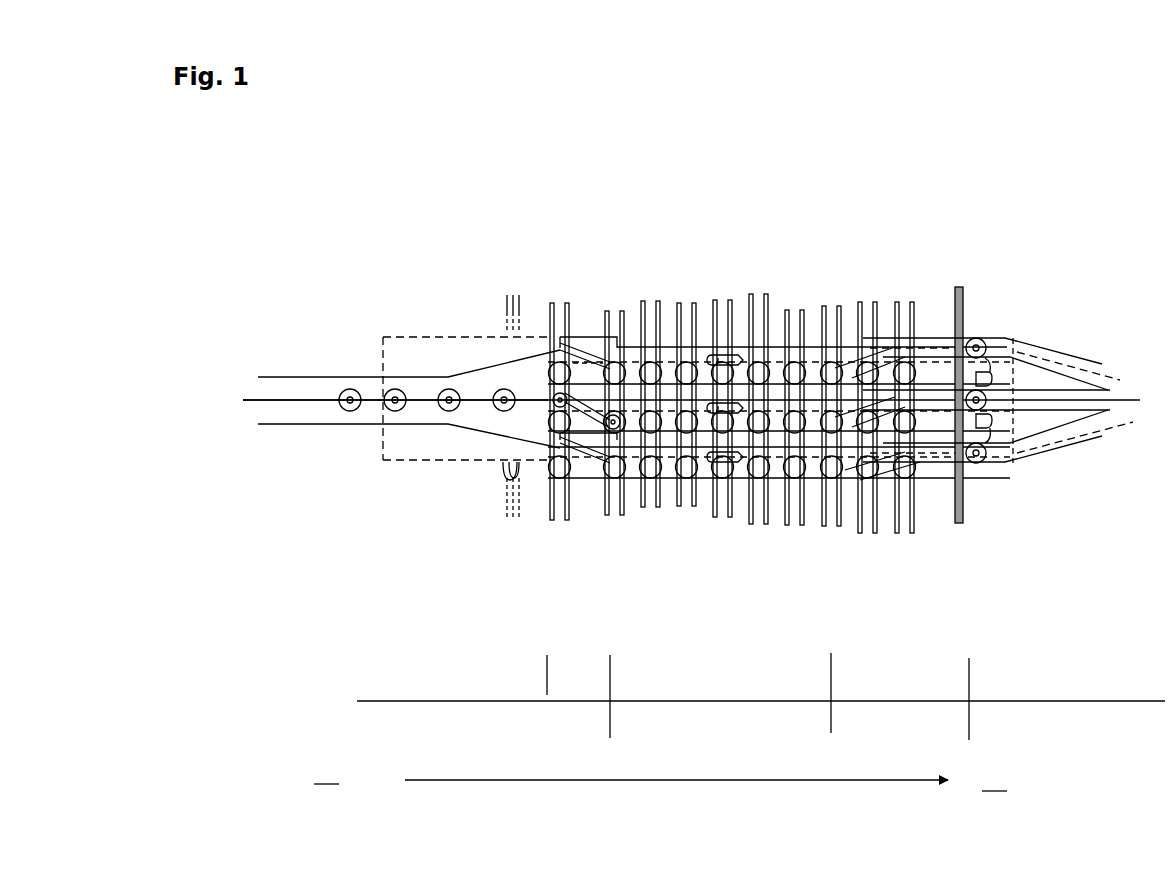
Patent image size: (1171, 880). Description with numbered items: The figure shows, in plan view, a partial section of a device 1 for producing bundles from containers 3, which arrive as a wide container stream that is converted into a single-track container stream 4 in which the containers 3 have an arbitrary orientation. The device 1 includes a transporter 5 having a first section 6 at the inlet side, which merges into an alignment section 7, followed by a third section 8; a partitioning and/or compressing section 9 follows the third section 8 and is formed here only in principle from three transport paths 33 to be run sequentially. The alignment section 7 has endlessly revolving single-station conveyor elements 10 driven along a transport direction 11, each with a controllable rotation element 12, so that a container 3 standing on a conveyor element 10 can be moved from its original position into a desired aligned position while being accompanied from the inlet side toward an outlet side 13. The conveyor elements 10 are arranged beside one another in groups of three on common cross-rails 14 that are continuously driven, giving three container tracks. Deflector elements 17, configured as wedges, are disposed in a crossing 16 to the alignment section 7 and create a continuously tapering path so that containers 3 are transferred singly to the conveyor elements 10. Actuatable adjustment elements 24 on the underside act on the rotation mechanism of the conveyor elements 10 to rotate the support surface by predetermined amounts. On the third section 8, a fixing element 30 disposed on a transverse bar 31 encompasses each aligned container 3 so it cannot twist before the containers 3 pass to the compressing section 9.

The device 1 is at (518, 177).
The containers 3 is at (350, 390).
The single-track container stream 4 is at (425, 398).
The transporter 5 is at (373, 413).
The first section 6 is at (483, 723).
The alignment section 7 is at (720, 696).
The third section 8 is at (900, 699).
The partitioning and/or compressing section 9 is at (1067, 720).
The single-station conveyor elements 10 is at (688, 370).
The transport direction 11 is at (676, 767).
The rotation element 12 is at (326, 773).
The outlet side 13 is at (994, 780).
The common cross-rails 14 is at (760, 300).
The crossing 16 is at (578, 696).
The deflector elements 17 is at (598, 336).
The adjustment elements 24 is at (719, 355).
The fixing element 30 is at (972, 340).
The transverse bar 31 is at (960, 288).
The transport paths 33 is at (926, 343).